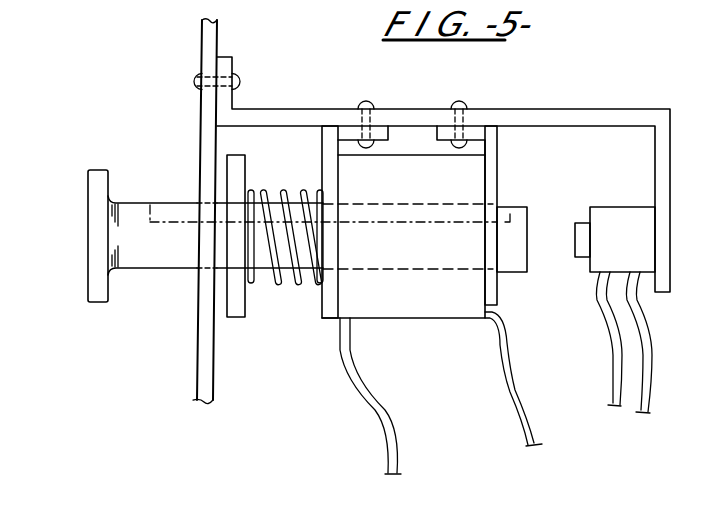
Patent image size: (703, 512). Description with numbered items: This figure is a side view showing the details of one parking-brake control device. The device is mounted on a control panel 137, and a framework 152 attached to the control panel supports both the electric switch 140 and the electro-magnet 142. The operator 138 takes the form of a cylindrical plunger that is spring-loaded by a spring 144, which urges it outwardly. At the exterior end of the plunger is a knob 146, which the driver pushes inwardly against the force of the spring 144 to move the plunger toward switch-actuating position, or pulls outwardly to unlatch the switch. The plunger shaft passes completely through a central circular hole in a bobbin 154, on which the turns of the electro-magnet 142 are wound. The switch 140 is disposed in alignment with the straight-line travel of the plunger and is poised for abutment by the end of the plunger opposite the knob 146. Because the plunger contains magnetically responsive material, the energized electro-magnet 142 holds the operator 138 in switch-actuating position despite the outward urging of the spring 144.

The control panel 137 is at (217, 37).
The framework 152 is at (276, 109).
The knob 146 is at (88, 250).
The operator 138 is at (138, 203).
The spring 144 is at (300, 190).
The electro-magnet 142 is at (397, 318).
The bobbin 154 is at (498, 175).
The electrical switch assembly 140 is at (612, 207).